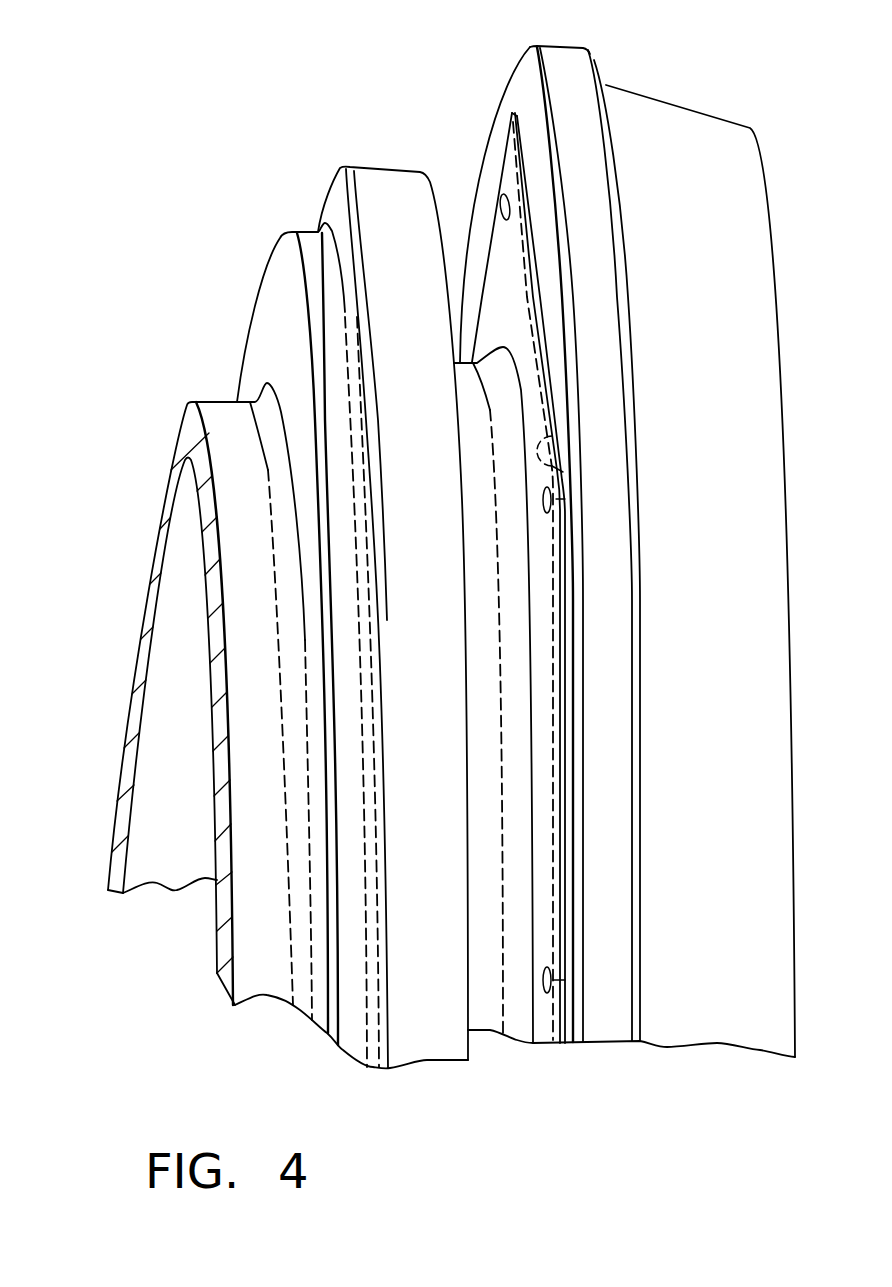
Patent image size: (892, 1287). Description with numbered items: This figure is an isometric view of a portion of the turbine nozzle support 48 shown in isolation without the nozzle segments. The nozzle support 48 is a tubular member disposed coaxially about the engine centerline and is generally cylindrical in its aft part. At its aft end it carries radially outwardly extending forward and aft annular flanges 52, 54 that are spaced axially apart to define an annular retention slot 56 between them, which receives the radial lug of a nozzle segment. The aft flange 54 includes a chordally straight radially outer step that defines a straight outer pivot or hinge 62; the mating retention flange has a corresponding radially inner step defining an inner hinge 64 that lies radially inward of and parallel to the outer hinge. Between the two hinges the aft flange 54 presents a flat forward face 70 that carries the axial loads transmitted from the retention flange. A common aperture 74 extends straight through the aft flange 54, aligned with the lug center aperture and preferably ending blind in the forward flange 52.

The nozzle support 48 is at (141, 266).
The forward annular flange 52 is at (340, 195).
The aft annular flange 54 is at (583, 48).
The annular retention slot 56 is at (455, 135).
The outer hinge 62 is at (512, 113).
The inner hinge 64 is at (575, 466).
The flat forward face 70 is at (520, 238).
The common aperture 74 is at (550, 506).